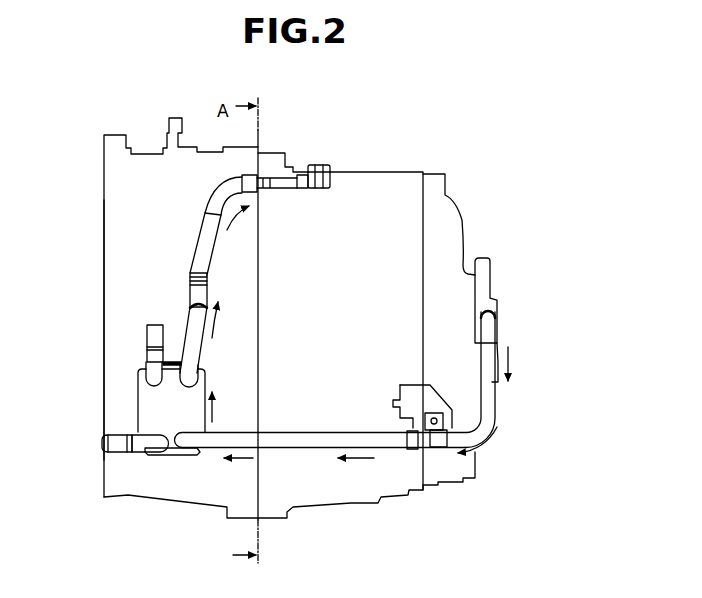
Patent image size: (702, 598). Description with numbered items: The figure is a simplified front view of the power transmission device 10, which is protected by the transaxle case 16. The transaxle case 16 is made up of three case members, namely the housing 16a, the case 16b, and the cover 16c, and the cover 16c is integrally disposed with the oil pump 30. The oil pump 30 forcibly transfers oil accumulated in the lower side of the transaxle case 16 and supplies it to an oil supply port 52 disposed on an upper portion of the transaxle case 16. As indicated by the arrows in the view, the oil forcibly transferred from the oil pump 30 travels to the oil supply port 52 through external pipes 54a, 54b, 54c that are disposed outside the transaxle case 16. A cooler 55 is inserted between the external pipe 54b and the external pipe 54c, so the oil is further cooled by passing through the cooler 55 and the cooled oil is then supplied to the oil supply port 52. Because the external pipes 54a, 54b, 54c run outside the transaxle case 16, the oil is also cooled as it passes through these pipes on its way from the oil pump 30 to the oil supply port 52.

The power transmission device 10 is at (486, 133).
The transaxle case 16 is at (88, 164).
The housing 16a is at (125, 328).
The case 16b is at (376, 200).
The cover 16c is at (444, 228).
The oil pump 30 is at (532, 310).
The oil supply port 52 is at (313, 165).
The external pipe 54a is at (490, 413).
The external pipe 54b is at (298, 437).
The external pipe 54c is at (200, 245).
The cooler 55 is at (168, 410).